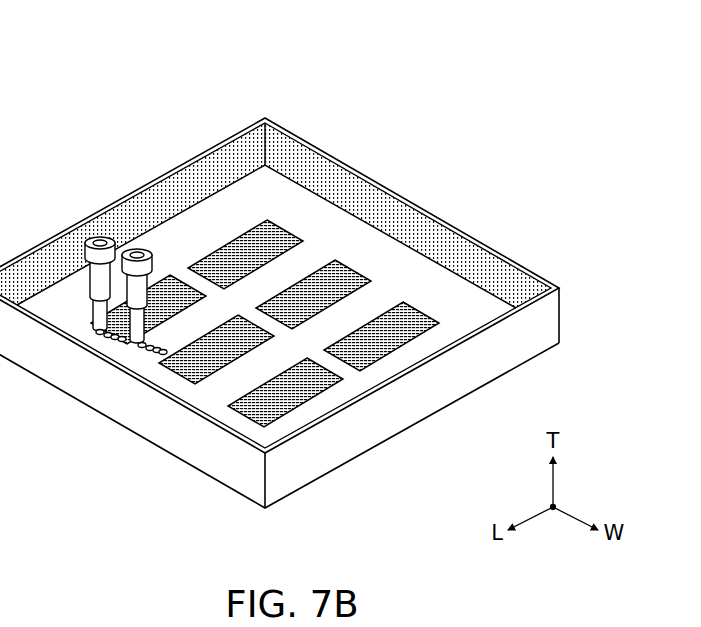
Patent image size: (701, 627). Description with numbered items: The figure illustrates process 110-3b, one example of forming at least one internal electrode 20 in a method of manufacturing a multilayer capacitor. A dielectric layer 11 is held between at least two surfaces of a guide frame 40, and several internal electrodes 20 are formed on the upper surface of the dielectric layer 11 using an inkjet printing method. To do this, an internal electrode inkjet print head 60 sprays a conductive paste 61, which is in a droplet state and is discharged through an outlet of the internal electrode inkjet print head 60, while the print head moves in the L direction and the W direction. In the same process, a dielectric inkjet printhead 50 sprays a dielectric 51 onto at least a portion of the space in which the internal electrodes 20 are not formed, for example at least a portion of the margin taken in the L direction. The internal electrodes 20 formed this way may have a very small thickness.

The process of forming at least one internal electrode 110-3b is at (145, 38).
The dielectric layer 11 is at (457, 297).
The internal electrode 20 is at (347, 287).
The guide frame 40 is at (553, 318).
The dielectric inkjet printhead 50 is at (142, 250).
The dielectric 51 is at (138, 347).
The internal electrode inkjet print head 60 is at (86, 243).
The conductive paste 61 is at (100, 334).